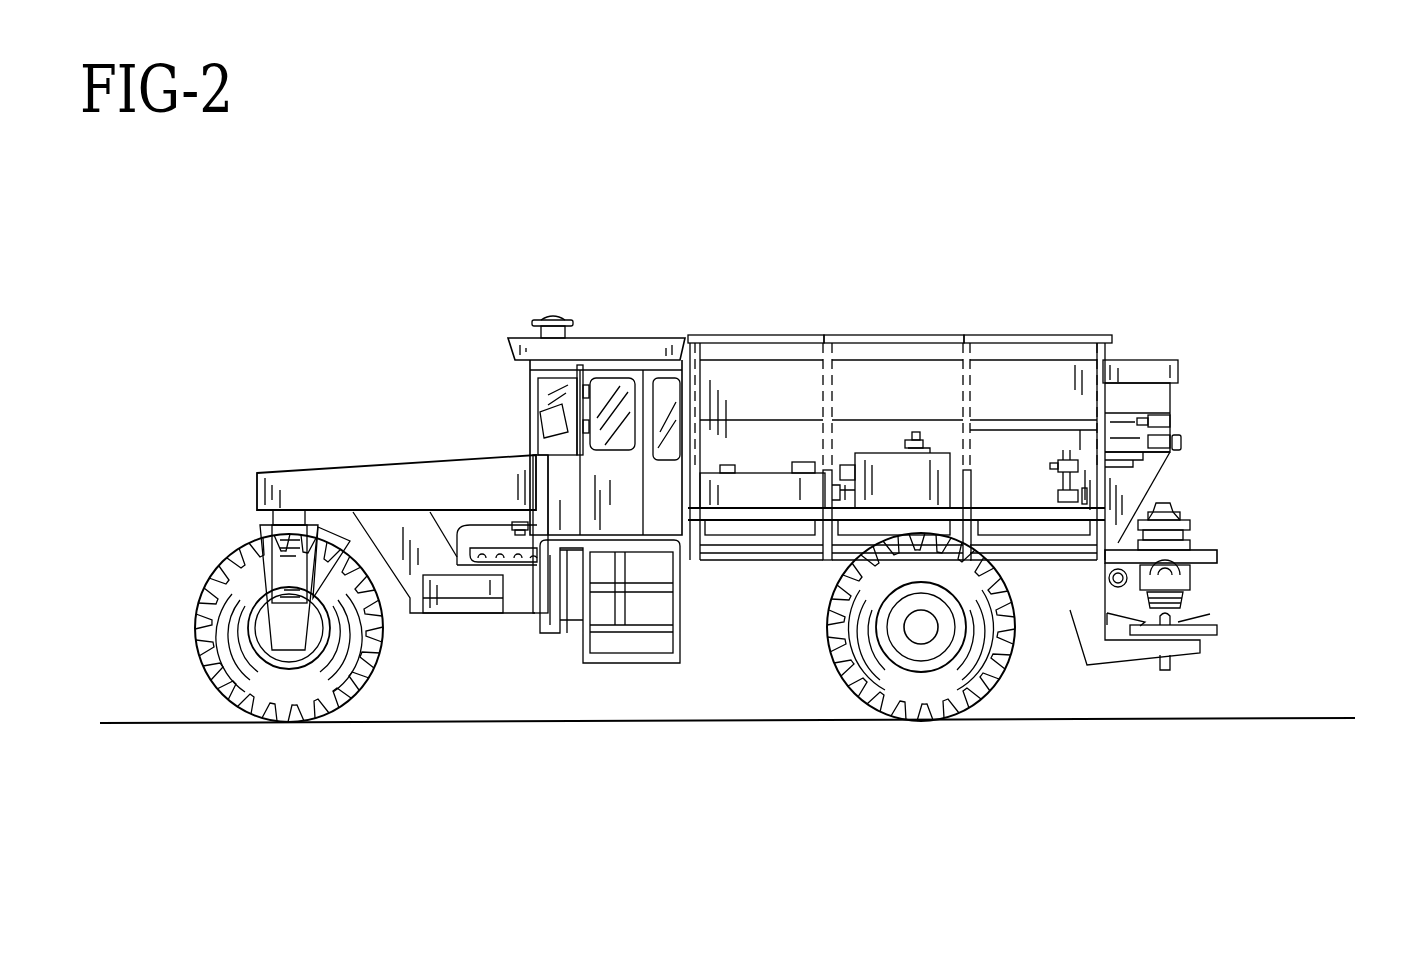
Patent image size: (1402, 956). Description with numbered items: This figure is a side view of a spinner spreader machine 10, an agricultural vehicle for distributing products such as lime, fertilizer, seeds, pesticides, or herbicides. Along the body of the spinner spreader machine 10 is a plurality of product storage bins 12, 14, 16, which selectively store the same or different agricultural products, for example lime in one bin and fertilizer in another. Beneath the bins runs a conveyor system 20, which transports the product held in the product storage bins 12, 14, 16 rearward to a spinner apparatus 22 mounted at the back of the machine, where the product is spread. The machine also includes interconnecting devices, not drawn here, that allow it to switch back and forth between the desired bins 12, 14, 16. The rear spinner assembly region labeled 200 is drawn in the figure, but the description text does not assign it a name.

The spinner spreader machine 10 is at (290, 298).
The product storage bin 12 is at (747, 348).
The product storage bin 14 is at (906, 348).
The product storage bin 16 is at (1062, 348).
The conveyor system 20 is at (858, 540).
The spinner assembly 200 is at (1190, 600).
The spinner apparatus 22 is at (1210, 615).